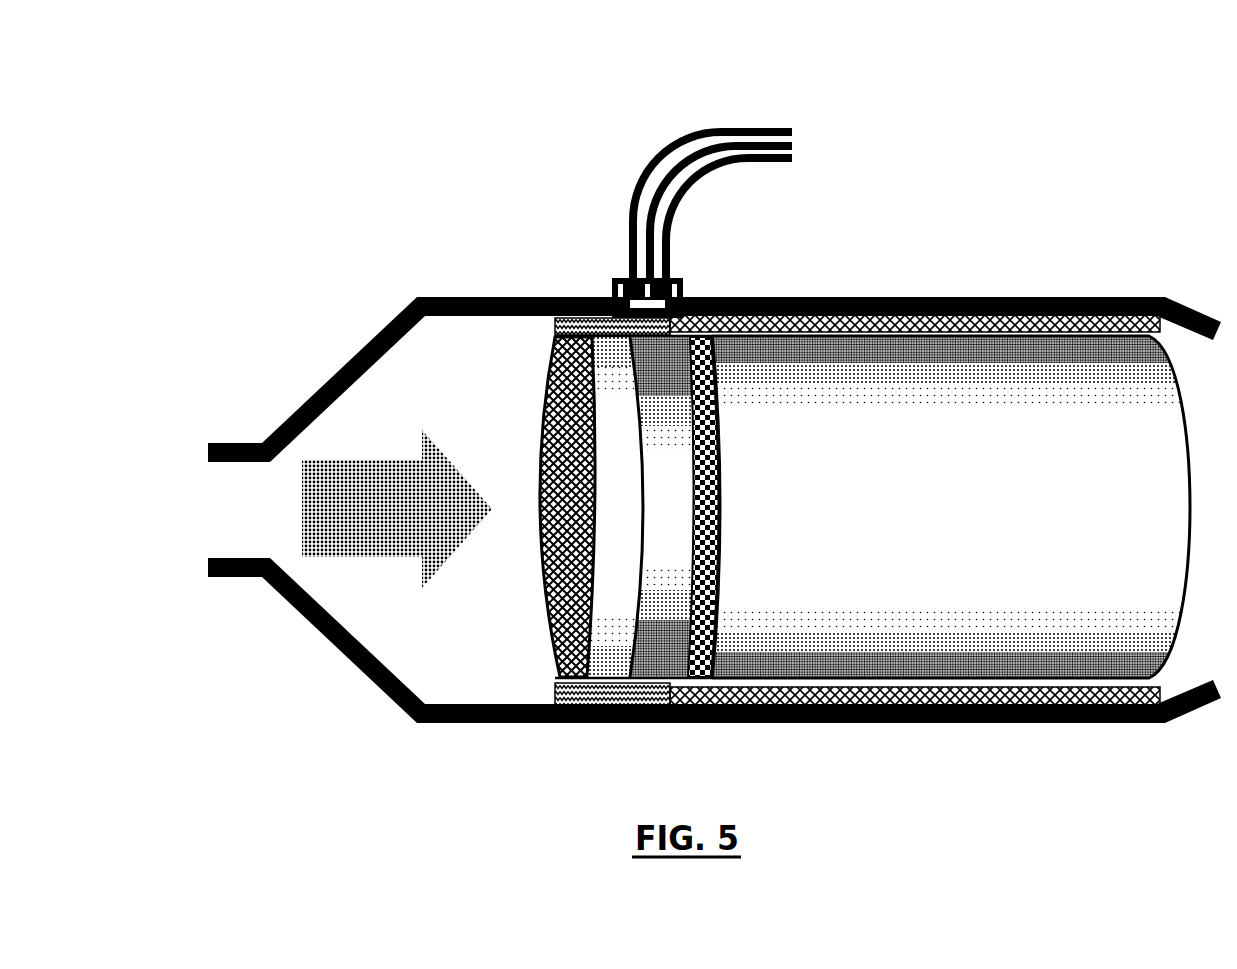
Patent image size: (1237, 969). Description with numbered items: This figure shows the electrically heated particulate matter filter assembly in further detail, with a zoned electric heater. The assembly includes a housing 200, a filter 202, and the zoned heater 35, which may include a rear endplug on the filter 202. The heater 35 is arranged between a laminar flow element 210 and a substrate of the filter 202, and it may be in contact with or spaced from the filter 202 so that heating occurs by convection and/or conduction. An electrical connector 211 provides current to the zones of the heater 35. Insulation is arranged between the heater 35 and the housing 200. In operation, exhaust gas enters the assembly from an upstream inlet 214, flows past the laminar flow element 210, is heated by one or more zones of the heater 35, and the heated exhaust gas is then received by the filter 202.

The housing 200 is at (902, 298).
The filter 202 is at (823, 497).
The laminar flow element 210 is at (600, 345).
The electrical connector 211 is at (915, 133).
The upstream inlet 214 is at (212, 513).
The zoned heater 35 is at (563, 460).